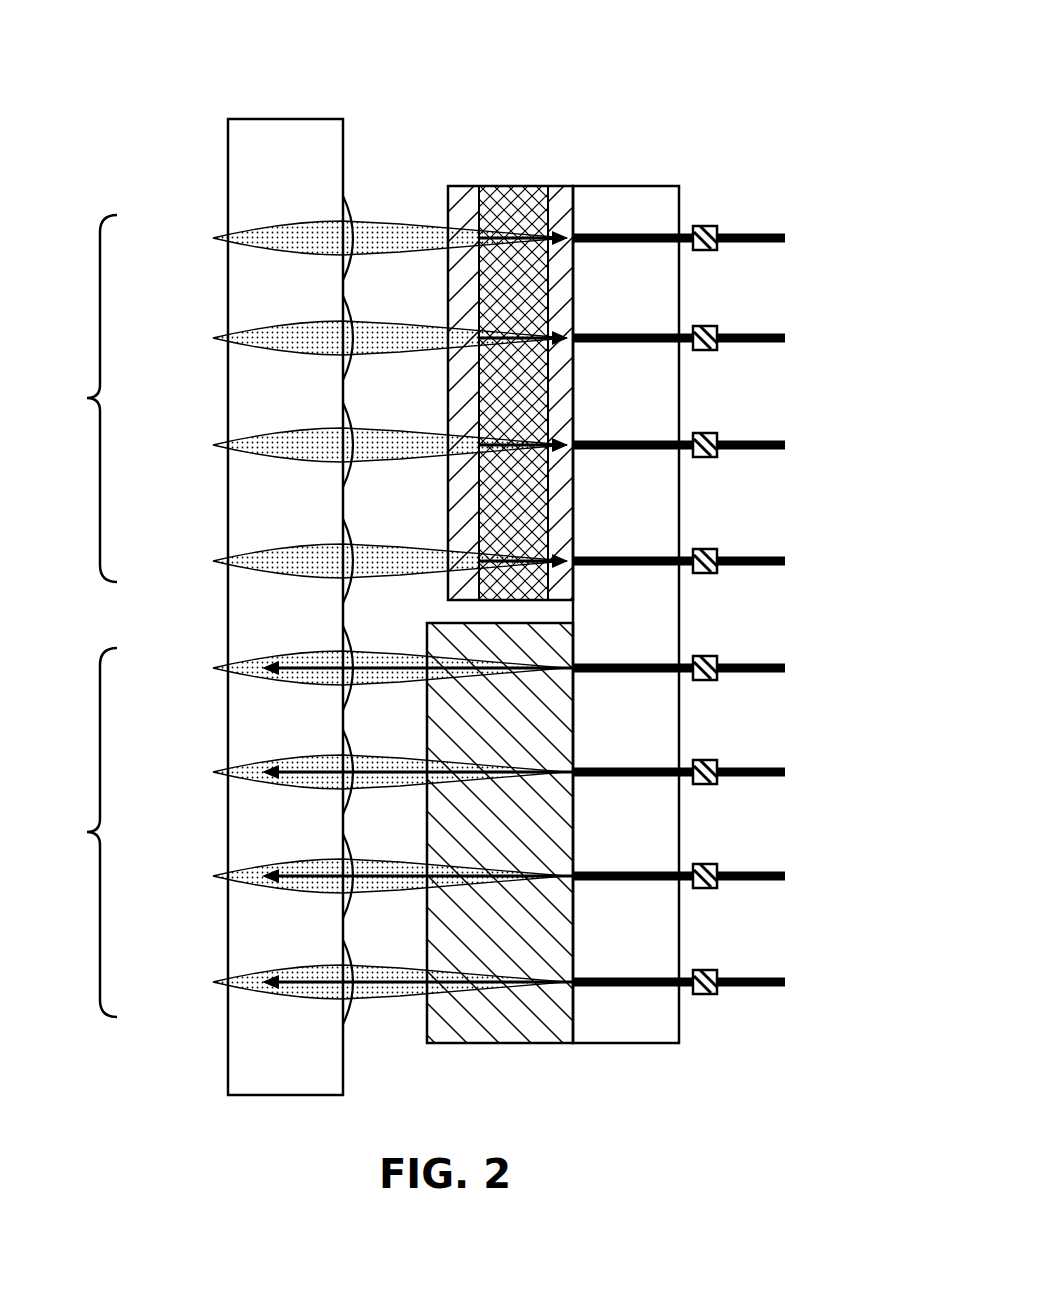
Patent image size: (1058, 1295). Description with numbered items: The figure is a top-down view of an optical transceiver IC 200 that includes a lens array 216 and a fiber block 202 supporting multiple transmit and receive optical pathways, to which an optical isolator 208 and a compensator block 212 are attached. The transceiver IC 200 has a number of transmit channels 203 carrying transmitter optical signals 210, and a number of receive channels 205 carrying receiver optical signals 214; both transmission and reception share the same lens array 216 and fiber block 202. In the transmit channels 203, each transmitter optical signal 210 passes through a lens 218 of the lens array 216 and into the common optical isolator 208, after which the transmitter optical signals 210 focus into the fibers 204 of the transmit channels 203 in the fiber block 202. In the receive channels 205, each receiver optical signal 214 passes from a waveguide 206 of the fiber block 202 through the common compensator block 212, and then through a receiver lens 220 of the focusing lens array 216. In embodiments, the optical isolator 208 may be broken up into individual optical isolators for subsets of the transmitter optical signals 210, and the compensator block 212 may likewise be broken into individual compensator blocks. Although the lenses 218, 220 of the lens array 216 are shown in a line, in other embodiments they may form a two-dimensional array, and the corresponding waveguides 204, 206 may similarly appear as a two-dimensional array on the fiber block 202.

The transceiver IC 200 is at (740, 48).
The fiber block 202 is at (640, 186).
The transmit channels 203 is at (112, 398).
The fibers 204 is at (663, 233).
The receive channels 205 is at (112, 832).
The waveguide 206 is at (620, 987).
The optical isolator 208 is at (505, 186).
The transmitter optical signals 210 is at (393, 228).
The compensator block 212 is at (502, 1043).
The receiver optical signals 214 is at (380, 996).
The lens array 216 is at (305, 118).
The lens 218 is at (348, 205).
The receiver lens 220 is at (352, 958).